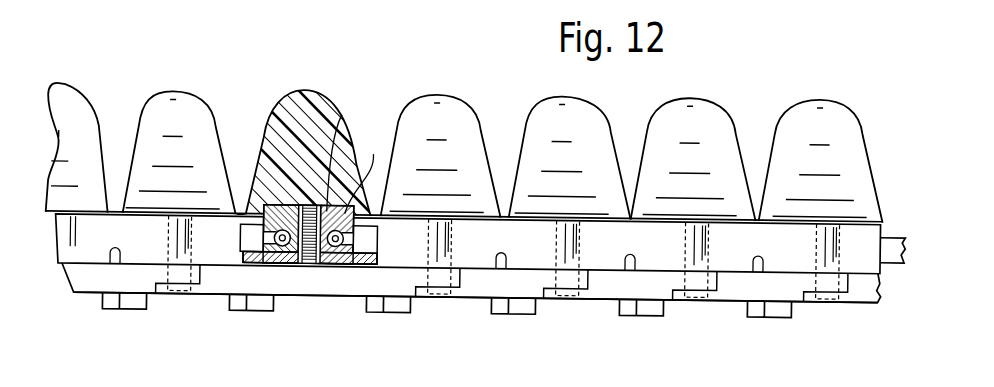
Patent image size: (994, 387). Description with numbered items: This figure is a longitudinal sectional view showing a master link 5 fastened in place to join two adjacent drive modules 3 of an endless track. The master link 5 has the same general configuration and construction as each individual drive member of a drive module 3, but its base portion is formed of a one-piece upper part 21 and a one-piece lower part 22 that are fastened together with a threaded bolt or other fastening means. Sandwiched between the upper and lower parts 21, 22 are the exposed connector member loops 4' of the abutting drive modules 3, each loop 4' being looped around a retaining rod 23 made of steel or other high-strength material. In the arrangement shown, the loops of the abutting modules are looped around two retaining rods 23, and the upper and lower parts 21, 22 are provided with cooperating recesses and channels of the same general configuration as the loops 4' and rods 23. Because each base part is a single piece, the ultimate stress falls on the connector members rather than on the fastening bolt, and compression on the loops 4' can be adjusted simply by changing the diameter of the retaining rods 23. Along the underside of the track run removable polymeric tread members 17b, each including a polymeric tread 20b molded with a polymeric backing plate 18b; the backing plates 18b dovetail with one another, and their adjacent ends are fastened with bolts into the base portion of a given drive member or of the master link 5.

The drive module 3 is at (77, 78).
The master link 5 is at (331, 78).
The connector member loop 4' is at (240, 151).
The retaining rod 23 is at (341, 114).
The upper part of master link base portion 21 is at (372, 150).
The lower part of master link base portion 22 is at (264, 265).
The removable polymeric tread member 17b is at (573, 309).
The polymeric backing plate 18b is at (603, 290).
The polymeric tread 20b is at (653, 318).